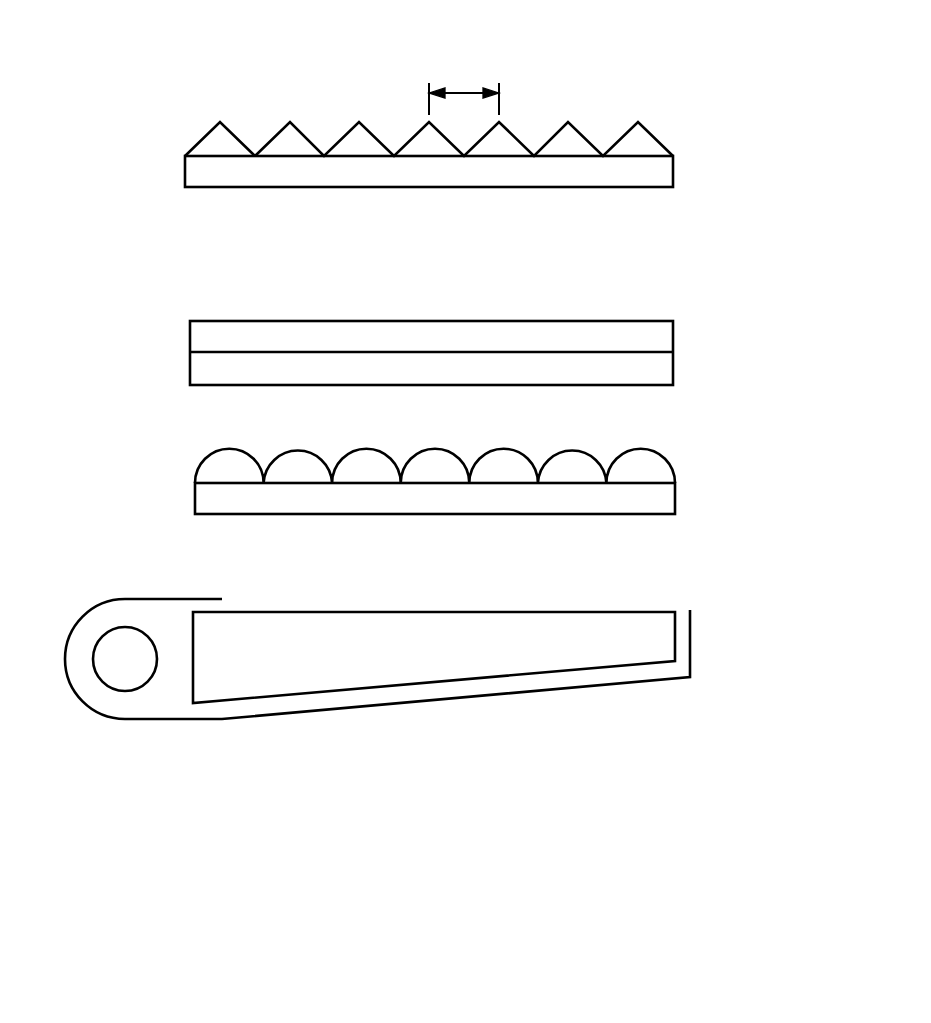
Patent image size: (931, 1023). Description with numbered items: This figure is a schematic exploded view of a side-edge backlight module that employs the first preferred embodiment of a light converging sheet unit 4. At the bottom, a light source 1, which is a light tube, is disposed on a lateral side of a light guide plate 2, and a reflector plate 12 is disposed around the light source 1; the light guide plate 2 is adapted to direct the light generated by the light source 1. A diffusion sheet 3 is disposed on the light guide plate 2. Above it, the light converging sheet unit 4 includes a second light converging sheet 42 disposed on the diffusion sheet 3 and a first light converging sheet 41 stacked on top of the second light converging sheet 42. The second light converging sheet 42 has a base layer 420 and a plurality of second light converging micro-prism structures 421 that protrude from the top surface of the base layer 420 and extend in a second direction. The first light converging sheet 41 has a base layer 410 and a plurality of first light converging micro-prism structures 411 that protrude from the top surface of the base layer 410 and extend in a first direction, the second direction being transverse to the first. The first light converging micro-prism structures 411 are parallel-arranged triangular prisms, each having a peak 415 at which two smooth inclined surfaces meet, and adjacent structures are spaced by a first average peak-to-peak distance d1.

The light source 1 is at (122, 670).
The reflector plate 12 is at (315, 710).
The light guide plate 2 is at (538, 660).
The diffusion sheet 3 is at (678, 490).
The light converging sheet unit 4 is at (748, 192).
The first light converging sheet 41 is at (673, 176).
The base layer 410 is at (197, 175).
The first light converging micro-prism structures 411 is at (227, 145).
The peak 415 is at (290, 122).
The second light converging sheet 42 is at (676, 362).
The base layer 420 is at (208, 366).
The second light converging micro-prism structures 421 is at (398, 350).
The first average peak-to-peak distance d1 is at (464, 88).